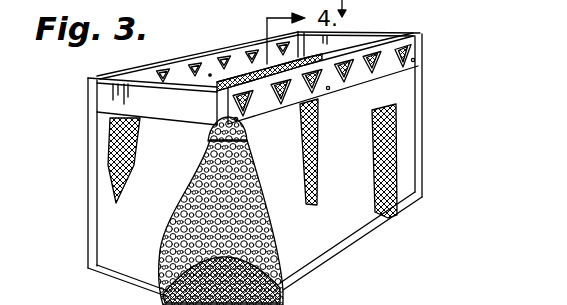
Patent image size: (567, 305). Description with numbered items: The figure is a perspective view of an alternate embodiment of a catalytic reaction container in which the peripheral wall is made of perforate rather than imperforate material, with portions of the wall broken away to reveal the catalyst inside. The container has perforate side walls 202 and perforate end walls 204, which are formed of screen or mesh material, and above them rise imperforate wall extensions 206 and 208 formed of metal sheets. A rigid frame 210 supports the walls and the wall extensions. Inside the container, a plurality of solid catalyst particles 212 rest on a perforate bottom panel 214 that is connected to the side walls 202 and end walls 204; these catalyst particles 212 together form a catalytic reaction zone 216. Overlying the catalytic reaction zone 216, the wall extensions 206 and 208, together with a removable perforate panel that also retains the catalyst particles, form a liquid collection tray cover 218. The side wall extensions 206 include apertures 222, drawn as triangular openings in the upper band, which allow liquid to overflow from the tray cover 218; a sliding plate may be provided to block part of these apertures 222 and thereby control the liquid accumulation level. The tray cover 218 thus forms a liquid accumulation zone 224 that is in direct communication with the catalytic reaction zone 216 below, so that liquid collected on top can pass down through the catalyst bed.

The perforate side wall 202 is at (409, 92).
The perforate end wall 204 is at (102, 191).
The imperforate wall extension 206 is at (213, 58).
The imperforate wall extension 208 is at (103, 92).
The rigid frame 210 is at (93, 240).
The solid catalyst particles 212 is at (266, 240).
The perforate bottom panel 214 is at (268, 303).
The catalytic reaction zone 216 is at (244, 134).
The liquid collection tray cover 218 is at (180, 67).
The aperture 222 is at (377, 123).
The liquid accumulation zone 224 is at (138, 70).